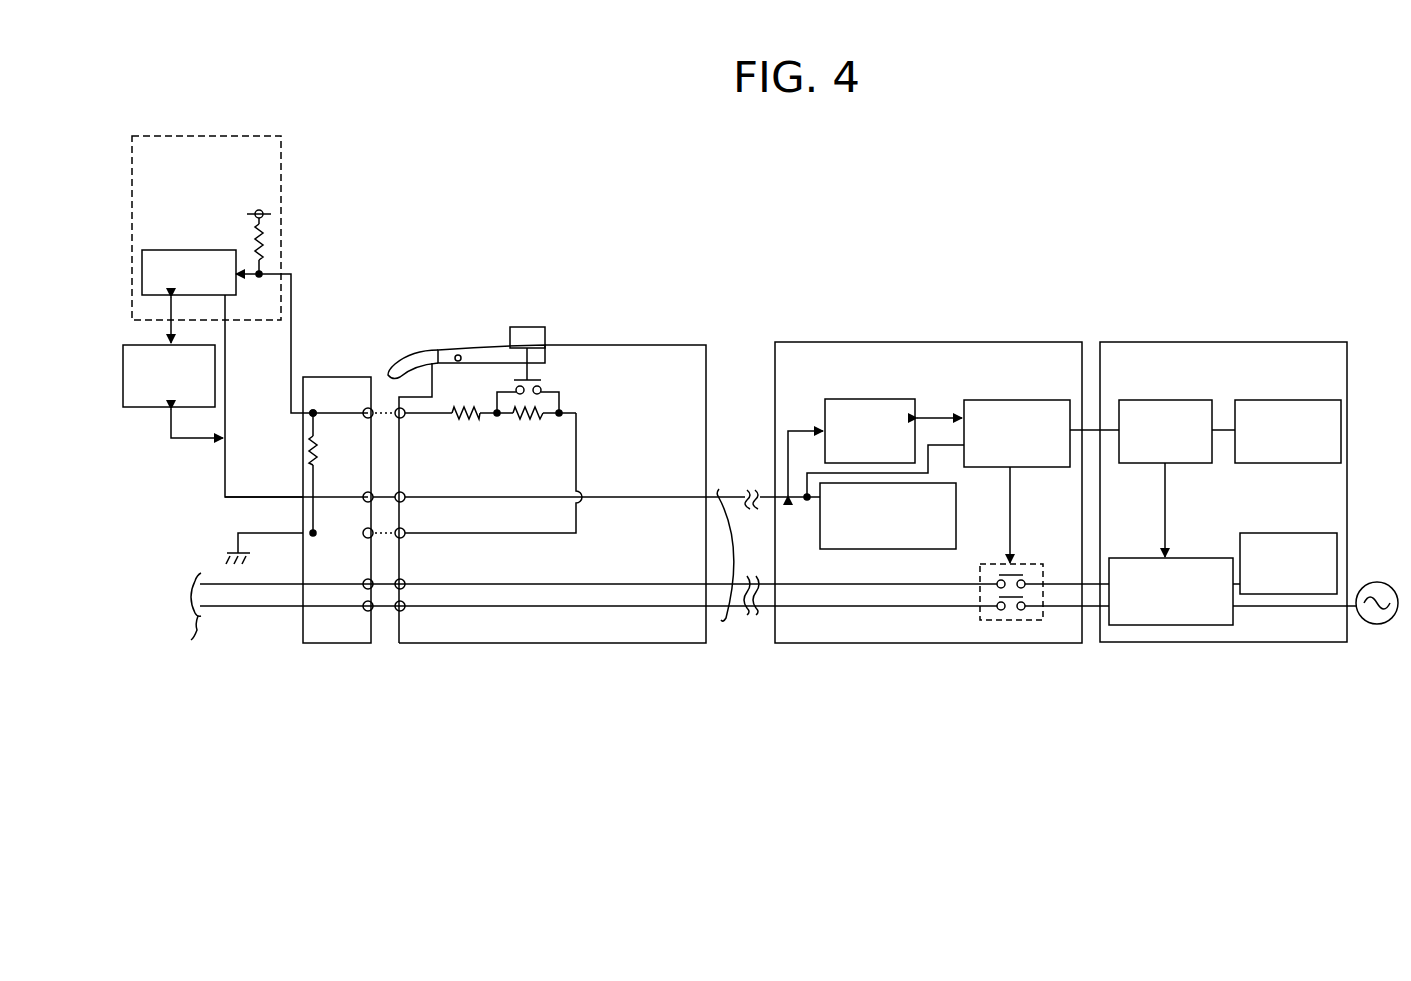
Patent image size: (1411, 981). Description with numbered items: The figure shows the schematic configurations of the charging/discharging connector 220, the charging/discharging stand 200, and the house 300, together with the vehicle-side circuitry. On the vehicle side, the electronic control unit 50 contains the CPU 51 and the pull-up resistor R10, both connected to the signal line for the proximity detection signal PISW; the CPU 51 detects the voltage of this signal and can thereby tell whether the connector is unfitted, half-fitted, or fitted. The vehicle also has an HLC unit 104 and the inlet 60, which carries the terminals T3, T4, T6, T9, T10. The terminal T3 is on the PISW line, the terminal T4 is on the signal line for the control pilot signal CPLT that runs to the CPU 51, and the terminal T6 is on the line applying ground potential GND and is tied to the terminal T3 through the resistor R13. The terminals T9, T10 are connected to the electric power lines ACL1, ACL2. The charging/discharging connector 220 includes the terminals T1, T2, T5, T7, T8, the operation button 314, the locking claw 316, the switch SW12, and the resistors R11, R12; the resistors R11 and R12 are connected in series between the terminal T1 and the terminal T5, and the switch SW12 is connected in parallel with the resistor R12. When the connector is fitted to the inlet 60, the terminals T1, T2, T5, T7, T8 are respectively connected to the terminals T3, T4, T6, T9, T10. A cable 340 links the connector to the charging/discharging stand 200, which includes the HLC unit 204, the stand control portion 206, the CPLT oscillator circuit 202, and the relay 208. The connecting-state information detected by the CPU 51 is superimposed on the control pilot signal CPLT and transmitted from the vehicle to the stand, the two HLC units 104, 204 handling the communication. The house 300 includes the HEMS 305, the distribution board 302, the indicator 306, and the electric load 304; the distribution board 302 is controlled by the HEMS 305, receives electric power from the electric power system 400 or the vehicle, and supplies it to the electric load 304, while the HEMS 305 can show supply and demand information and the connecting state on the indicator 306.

The electronic control unit 50 is at (282, 174).
The CPU 51 is at (190, 250).
The pull-up resistor R10 is at (270, 242).
The proximity detection signal PISW is at (313, 343).
The HLC unit 104 is at (147, 408).
The inlet 60 is at (336, 377).
The resistor R13 is at (306, 446).
The control pilot signal CPLT is at (264, 485).
The ground potential GND is at (243, 546).
The terminal T1 is at (404, 418).
The terminal T2 is at (408, 494).
The terminal T3 is at (360, 409).
The terminal T4 is at (360, 493).
The terminal T5 is at (408, 537).
The terminal T6 is at (360, 537).
The terminal T7 is at (408, 580).
The terminal T8 is at (408, 610).
The terminal T9 is at (360, 580).
The terminal T10 is at (362, 610).
The electric power line ACL1 is at (190, 616).
The electric power line ACL2 is at (187, 673).
The charging/discharging connector 220 is at (661, 344).
The locking claw 316 is at (412, 350).
The operation button 314 is at (527, 326).
The switch SW12 is at (512, 381).
The resistor R11 is at (463, 428).
The resistor R12 is at (526, 428).
The cable 340 is at (721, 487).
The charging/discharging stand 200 is at (1008, 342).
The HLC unit 204 is at (880, 399).
The stand control portion 206 is at (1020, 400).
The CPLT oscillator circuit 202 is at (880, 549).
The relay 208 is at (1020, 566).
The house 300 is at (1320, 342).
The HEMS 305 is at (1158, 400).
The indicator 306 is at (1280, 400).
The distribution board 302 is at (1180, 558).
The electric load 304 is at (1282, 533).
The electric power system 400 is at (1377, 583).